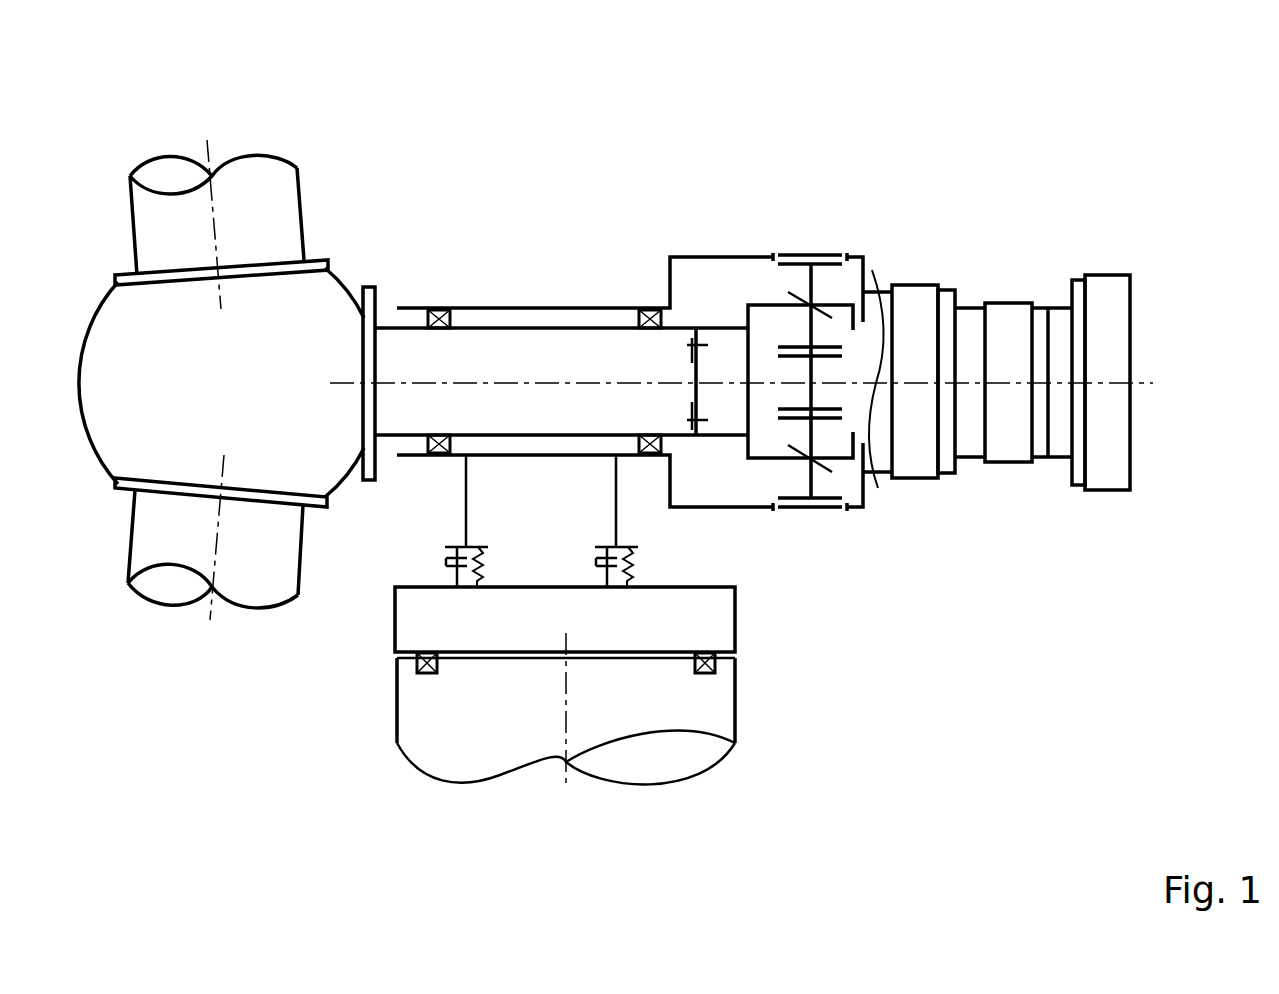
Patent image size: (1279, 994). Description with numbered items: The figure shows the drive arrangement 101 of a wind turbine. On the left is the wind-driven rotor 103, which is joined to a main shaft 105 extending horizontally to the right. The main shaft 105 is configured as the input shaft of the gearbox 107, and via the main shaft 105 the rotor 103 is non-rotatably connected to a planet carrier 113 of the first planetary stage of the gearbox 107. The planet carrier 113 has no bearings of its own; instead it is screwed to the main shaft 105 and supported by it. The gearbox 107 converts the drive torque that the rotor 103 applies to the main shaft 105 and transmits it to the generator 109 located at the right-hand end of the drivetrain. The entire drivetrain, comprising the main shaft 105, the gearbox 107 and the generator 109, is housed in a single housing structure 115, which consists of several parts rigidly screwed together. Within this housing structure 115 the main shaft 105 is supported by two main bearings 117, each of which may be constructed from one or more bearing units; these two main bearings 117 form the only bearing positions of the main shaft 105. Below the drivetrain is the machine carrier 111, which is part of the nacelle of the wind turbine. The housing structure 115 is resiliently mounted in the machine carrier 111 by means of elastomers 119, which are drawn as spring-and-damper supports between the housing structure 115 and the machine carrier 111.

The drive arrangement 101 is at (811, 226).
The wind-driven rotor 103 is at (310, 327).
The main shaft 105 is at (547, 357).
The gearbox 107 is at (880, 260).
The generator 109 is at (1108, 315).
The machine carrier 111 is at (537, 622).
The planet carrier 113 is at (773, 305).
The housing structure 115 is at (723, 508).
The main bearings 117 is at (650, 312).
The elastomers 119 is at (467, 577).